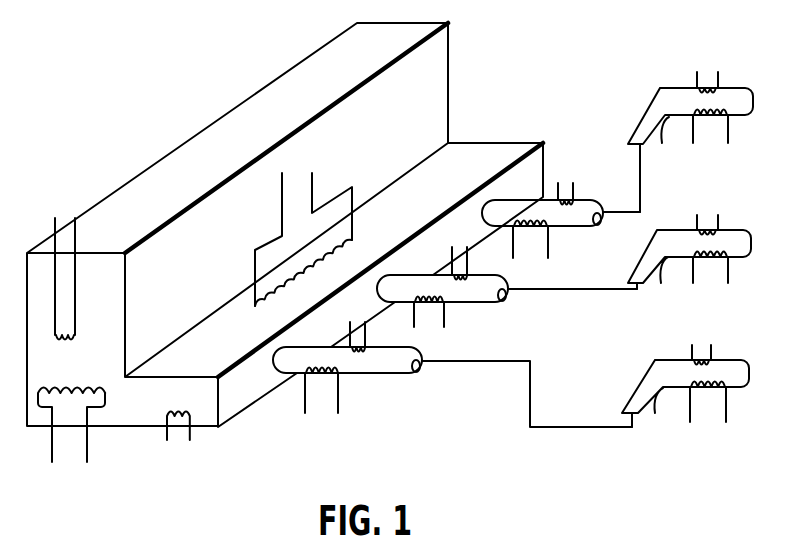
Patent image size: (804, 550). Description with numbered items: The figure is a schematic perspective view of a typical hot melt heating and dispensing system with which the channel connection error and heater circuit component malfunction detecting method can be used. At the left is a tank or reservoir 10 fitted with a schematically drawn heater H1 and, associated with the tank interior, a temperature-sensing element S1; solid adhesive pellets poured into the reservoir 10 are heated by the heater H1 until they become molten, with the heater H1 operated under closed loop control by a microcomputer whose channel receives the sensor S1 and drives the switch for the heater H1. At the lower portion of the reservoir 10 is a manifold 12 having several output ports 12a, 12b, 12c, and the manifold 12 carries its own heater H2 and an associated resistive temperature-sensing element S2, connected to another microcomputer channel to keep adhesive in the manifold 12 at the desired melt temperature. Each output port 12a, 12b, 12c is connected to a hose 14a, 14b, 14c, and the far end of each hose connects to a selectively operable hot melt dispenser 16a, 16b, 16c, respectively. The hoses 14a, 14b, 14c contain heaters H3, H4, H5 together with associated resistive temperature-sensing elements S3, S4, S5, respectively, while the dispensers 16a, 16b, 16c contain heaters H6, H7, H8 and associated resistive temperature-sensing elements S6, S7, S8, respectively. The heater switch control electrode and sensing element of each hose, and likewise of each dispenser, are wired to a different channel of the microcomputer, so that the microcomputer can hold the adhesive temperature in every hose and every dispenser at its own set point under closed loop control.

The tank or reservoir 10 is at (202, 150).
The manifold 12 is at (465, 160).
The manifold output port 12a is at (272, 350).
The manifold output port 12b is at (377, 282).
The manifold output port 12c is at (484, 209).
The hose 14a is at (277, 372).
The hose 14b is at (386, 274).
The hose 14c is at (490, 200).
The hot melt dispenser 16a is at (738, 362).
The hot melt dispenser 16b is at (742, 228).
The hot melt dispenser 16c is at (740, 86).
The temperature-sensing element S1 is at (66, 267).
The resistive temperature-sensing element S2 is at (178, 442).
The resistive temperature-sensing element S3 is at (357, 326).
The resistive temperature-sensing element S4 is at (459, 252).
The resistive temperature-sensing element S5 is at (566, 182).
The resistive temperature-sensing element S6 is at (701, 344).
The resistive temperature-sensing element S7 is at (706, 214).
The resistive temperature-sensing element S8 is at (709, 72).
The heater H1 is at (71, 430).
The heater H2 is at (303, 239).
The heater H3 is at (321, 392).
The heater H4 is at (429, 315).
The heater H5 is at (530, 241).
The heater H6 is at (708, 403).
The heater H7 is at (710, 271).
The heater H8 is at (710, 130).